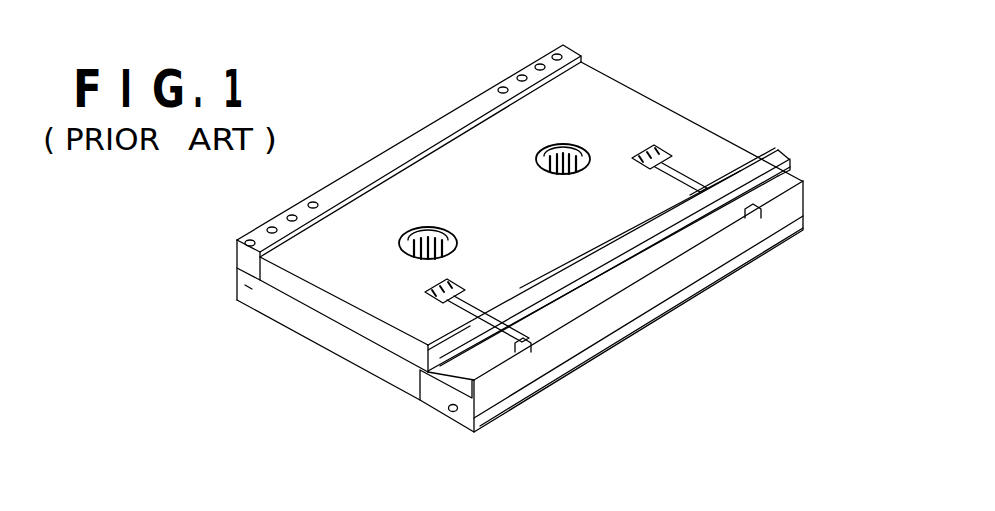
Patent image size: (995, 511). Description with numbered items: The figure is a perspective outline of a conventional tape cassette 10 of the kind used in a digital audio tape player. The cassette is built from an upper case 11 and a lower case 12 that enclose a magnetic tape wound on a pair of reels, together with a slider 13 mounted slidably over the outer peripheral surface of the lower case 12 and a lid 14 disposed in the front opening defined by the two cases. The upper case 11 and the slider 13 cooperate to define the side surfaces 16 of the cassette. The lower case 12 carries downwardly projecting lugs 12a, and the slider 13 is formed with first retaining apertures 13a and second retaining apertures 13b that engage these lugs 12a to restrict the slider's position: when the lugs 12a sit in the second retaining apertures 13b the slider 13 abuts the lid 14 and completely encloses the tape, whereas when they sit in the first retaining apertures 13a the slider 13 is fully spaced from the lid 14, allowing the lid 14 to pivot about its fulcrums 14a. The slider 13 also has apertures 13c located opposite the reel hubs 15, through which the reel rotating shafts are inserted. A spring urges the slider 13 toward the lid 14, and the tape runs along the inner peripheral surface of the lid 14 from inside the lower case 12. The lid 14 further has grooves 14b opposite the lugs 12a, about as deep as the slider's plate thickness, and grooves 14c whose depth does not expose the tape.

The tape cassette 10 is at (606, 101).
The upper case 11 is at (292, 313).
The lower case 12 is at (241, 251).
The lugs 12a is at (465, 312).
The slider 13 is at (352, 207).
The first retaining apertures 13a is at (428, 350).
The second retaining apertures 13b is at (398, 283).
The apertures 13c is at (431, 228).
The lid 14 is at (797, 218).
The fulcrums 14a is at (453, 412).
The grooves 14b is at (527, 342).
The grooves 14c is at (560, 328).
The reel hubs 15 is at (404, 248).
The side surfaces 16 is at (255, 297).